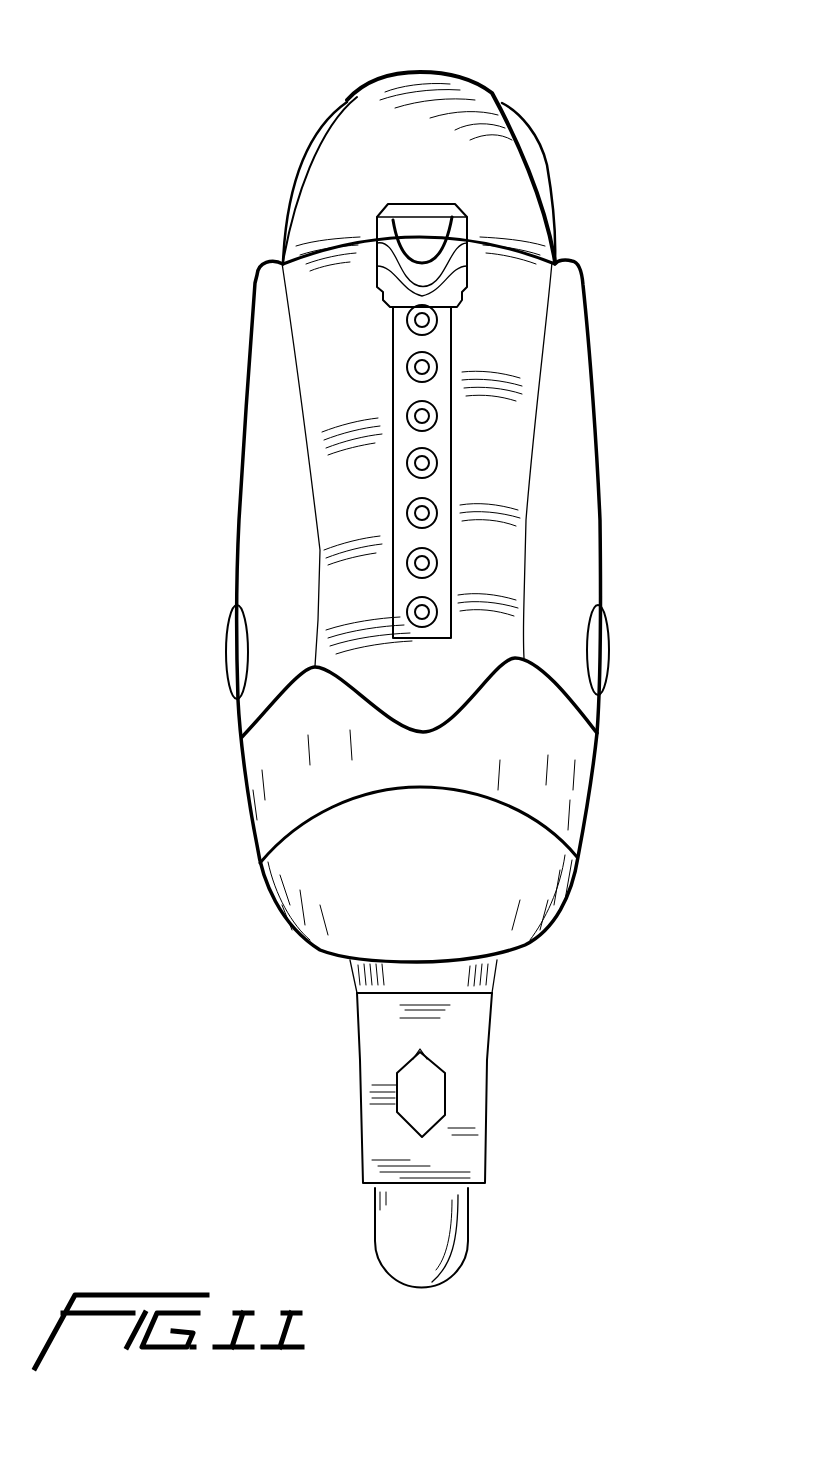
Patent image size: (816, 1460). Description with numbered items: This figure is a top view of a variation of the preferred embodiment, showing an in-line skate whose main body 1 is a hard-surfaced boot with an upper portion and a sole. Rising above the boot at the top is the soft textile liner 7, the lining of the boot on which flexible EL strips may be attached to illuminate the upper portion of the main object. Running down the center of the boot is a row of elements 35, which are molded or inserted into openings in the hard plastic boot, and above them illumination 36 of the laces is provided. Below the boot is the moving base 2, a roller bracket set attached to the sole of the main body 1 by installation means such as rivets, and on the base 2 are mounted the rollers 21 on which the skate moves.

The main body 1 is at (578, 458).
The base 2 is at (373, 1055).
The soft textile liner 7 is at (363, 107).
The rollers 21 is at (457, 1220).
The elements 35 is at (410, 417).
The illumination of the laces 36 is at (452, 226).